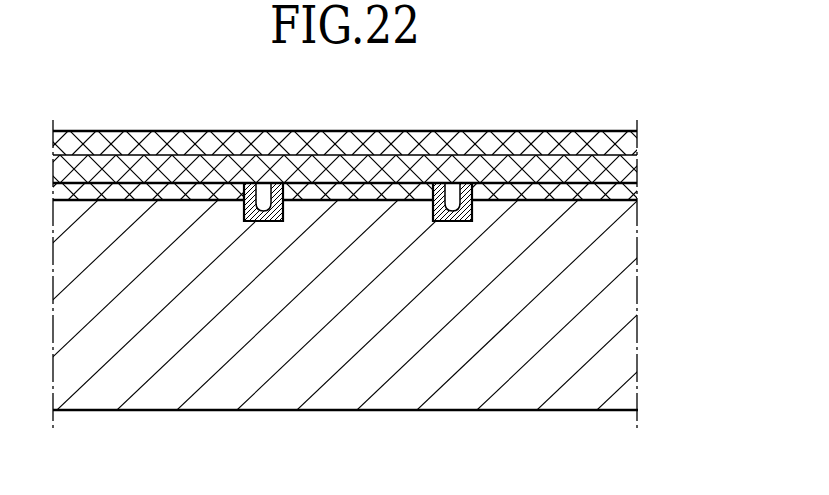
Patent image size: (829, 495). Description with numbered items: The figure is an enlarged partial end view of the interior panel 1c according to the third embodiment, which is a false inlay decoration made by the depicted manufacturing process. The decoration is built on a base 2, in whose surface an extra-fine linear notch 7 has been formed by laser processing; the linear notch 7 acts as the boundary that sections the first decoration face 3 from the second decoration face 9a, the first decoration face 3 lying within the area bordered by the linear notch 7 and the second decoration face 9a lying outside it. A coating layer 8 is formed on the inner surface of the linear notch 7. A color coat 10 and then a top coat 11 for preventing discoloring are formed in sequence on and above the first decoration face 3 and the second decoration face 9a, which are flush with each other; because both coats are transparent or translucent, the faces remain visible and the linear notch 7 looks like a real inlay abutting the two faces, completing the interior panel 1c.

The interior panel 1c is at (663, 98).
The base 2 is at (622, 367).
The first decoration face 3 is at (360, 187).
The linear notch 7 is at (244, 209).
The coating layer 8 is at (265, 203).
The second decoration face 9a is at (165, 188).
The color coat 10 is at (622, 167).
The top coat 11 is at (638, 137).